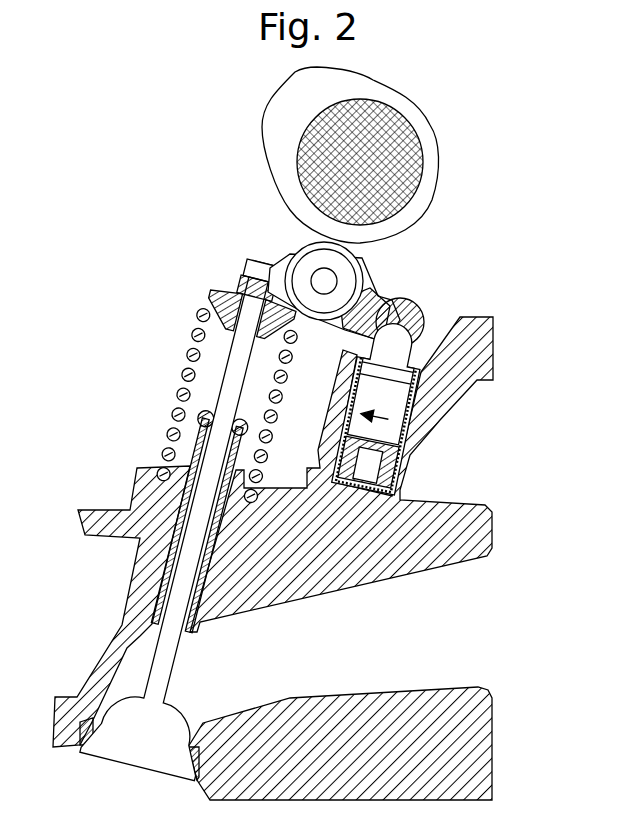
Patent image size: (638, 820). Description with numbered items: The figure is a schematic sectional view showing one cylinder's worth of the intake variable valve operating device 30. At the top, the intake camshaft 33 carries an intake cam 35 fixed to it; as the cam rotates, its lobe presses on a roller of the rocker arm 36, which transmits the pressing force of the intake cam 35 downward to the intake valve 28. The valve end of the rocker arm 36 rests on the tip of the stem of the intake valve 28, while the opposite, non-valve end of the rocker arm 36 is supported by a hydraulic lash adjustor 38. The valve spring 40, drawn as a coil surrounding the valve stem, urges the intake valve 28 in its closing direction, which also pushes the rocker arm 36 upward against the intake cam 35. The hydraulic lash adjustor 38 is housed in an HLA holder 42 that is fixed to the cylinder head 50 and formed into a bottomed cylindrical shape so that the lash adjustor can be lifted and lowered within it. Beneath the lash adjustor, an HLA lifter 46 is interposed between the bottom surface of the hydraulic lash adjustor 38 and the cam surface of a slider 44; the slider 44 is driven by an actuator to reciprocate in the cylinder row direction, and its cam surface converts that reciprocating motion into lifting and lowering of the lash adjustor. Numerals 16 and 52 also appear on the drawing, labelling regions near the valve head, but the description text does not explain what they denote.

The intake port 16 is at (352, 651).
The intake valve 28 is at (163, 673).
The intake variable valve operating device 30 is at (401, 288).
The intake camshaft 33 is at (392, 157).
The intake cam 35 is at (432, 122).
The rocker arm 36 is at (288, 254).
The hydraulic lash adjustor (HLA) 38 is at (443, 414).
The valve spring 40 is at (182, 397).
The HLA holder 42 is at (423, 430).
The slider 44 is at (427, 500).
The HLA lifter 46 is at (368, 462).
The cylinder head 50 is at (468, 738).
The valve face 52 is at (133, 793).